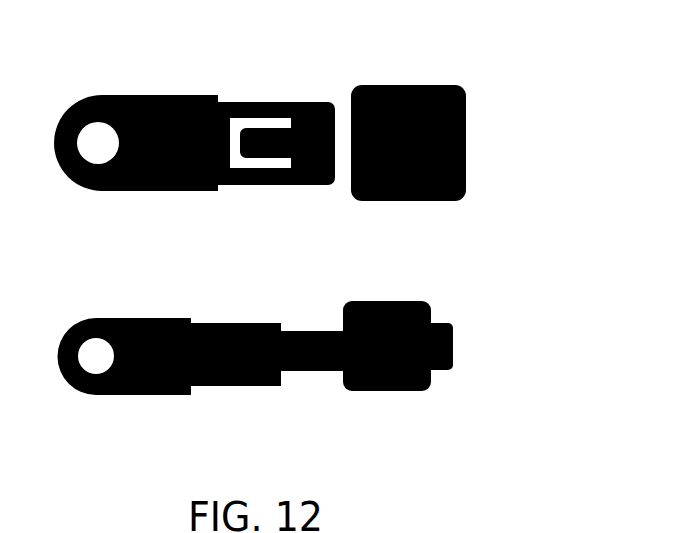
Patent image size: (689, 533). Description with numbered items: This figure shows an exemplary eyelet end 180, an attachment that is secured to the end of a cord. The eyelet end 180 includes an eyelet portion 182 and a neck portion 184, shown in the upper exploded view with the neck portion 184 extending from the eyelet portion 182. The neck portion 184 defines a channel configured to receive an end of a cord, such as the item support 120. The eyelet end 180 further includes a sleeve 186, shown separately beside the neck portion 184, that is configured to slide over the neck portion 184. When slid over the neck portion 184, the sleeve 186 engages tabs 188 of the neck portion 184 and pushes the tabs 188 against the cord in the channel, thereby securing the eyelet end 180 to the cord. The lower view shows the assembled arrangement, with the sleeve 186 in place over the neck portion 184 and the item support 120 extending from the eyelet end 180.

The eyelet end 180 is at (273, 136).
The eyelet portion 182 is at (140, 88).
The neck portion 184 is at (276, 152).
The sleeve 186 is at (427, 78).
The tabs 188 is at (251, 155).
The item support 120 is at (440, 360).